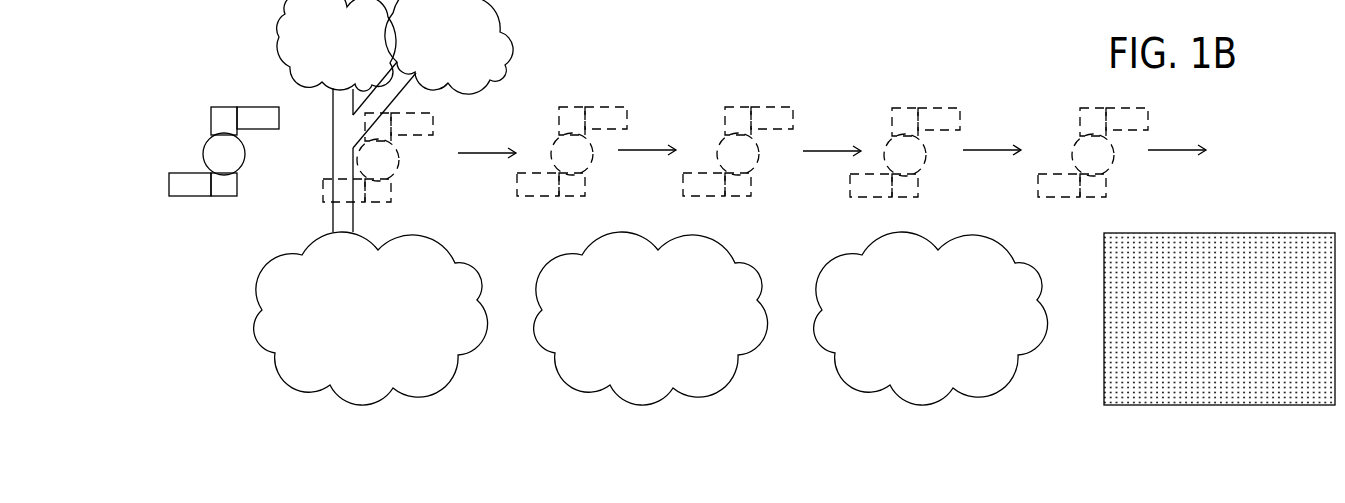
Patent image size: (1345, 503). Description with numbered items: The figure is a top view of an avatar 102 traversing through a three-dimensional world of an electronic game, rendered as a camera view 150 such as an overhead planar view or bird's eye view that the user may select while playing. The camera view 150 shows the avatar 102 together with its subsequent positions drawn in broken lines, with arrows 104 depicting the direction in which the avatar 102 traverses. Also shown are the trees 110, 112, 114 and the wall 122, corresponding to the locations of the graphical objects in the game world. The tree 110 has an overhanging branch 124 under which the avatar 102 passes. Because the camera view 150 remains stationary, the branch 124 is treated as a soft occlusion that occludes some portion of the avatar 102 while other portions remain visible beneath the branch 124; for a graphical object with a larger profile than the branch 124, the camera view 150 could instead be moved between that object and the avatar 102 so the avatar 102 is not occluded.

The avatar 102 is at (232, 120).
The arrows 104 is at (650, 148).
The tree 110 is at (273, 292).
The tree 112 is at (557, 297).
The tree 114 is at (828, 297).
The wall 122 is at (1175, 247).
The overhanging branch 124 is at (340, 173).
The camera view 150 is at (622, 62).